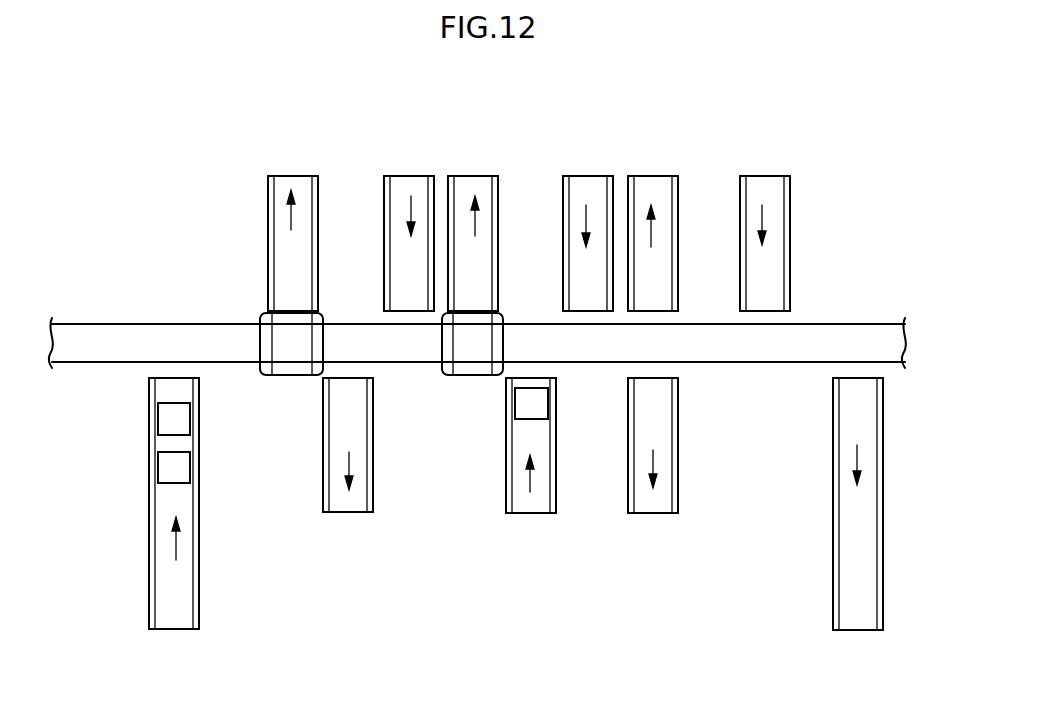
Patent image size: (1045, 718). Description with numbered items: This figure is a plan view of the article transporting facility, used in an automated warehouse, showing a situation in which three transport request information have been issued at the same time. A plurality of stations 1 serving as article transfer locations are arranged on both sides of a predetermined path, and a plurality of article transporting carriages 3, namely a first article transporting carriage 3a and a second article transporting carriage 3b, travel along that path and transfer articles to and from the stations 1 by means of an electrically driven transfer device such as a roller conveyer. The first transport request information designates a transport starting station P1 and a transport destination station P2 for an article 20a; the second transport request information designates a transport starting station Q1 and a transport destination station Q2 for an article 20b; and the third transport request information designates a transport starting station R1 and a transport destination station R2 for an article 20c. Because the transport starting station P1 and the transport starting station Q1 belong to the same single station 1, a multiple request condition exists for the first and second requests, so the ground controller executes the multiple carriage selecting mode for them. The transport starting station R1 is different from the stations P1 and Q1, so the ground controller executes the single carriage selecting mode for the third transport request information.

The station 1 is at (290, 176).
The article transporting carriage 3 is at (373, 378).
The first article transporting carriage 3a is at (286, 372).
The second article transporting carriage 3b is at (462, 374).
The article 20a is at (172, 421).
The article 20b is at (173, 468).
The article 20c is at (540, 402).
The transport starting station P1 is at (201, 420).
The transport destination station P2 is at (266, 258).
The transport starting station Q1 is at (201, 467).
The transport destination station Q2 is at (500, 262).
The transport starting station R1 is at (504, 410).
The transport destination station R2 is at (680, 262).